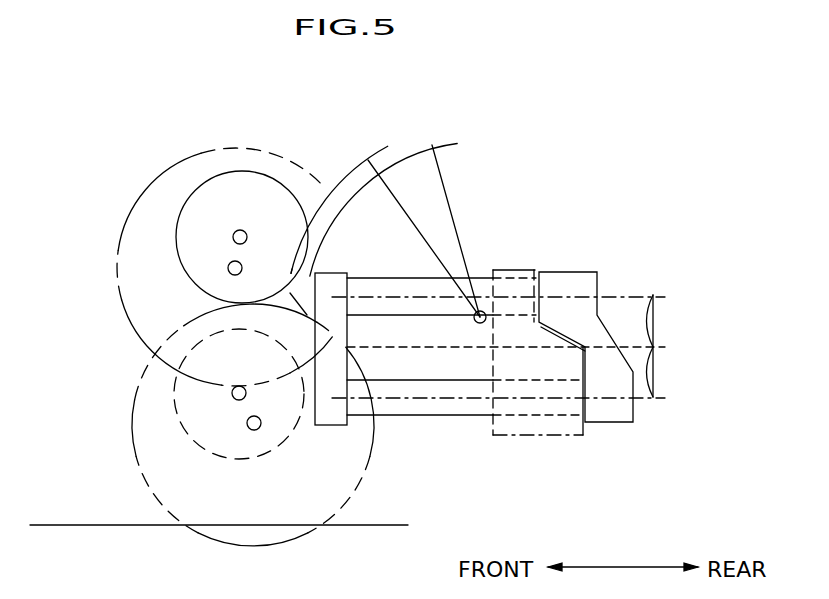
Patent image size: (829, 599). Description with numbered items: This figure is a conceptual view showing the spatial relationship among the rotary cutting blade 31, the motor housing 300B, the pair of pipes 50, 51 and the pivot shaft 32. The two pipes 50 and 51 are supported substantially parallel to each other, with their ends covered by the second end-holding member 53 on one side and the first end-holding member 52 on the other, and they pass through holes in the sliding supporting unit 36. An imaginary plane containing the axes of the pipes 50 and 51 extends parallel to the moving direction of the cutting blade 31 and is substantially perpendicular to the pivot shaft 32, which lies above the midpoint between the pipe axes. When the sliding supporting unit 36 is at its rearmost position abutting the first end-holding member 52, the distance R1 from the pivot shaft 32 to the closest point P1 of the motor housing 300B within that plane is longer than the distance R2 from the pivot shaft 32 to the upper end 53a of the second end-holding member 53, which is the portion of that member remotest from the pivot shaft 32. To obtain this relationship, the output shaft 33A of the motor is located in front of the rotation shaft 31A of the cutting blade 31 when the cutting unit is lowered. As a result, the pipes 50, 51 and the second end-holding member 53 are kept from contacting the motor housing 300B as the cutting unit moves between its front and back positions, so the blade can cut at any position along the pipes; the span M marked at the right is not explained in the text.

The cutting blade 31 is at (127, 222).
The motor housing 300B is at (187, 190).
The output shaft 33A is at (237, 401).
The rotation shaft 31A is at (254, 431).
The second end-holding member 53 is at (333, 425).
The upper end 53a is at (300, 271).
The closest point P1 is at (298, 268).
The distance R1 is at (368, 160).
The distance R2 is at (432, 145).
The pipe 50 is at (393, 277).
The pipe 51 is at (452, 417).
The pivot shaft 32 is at (481, 311).
The sliding supporting unit 36 is at (545, 437).
The first end-holding member 52 is at (568, 270).
The movement range M is at (653, 347).